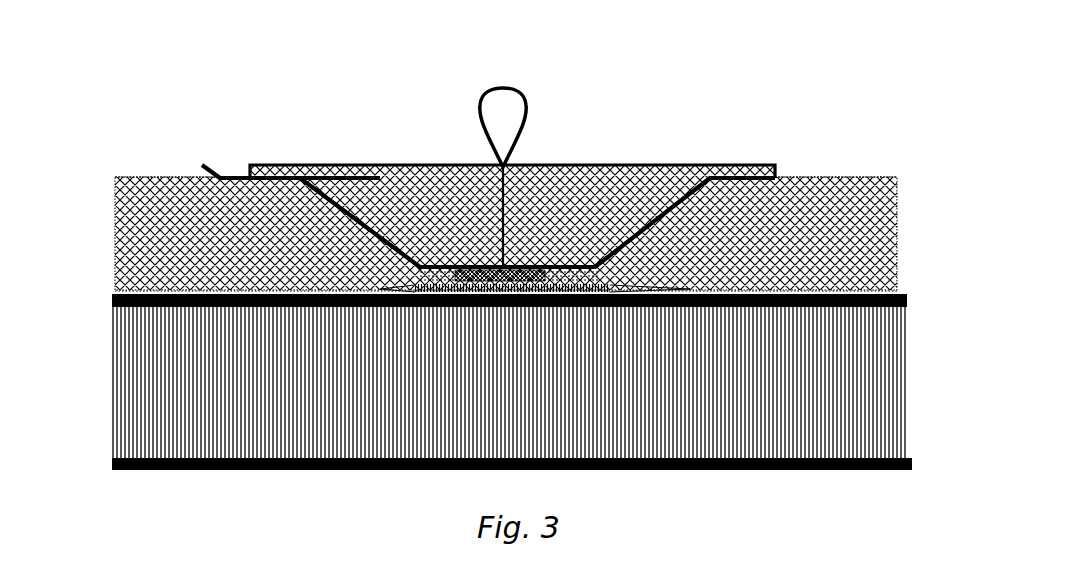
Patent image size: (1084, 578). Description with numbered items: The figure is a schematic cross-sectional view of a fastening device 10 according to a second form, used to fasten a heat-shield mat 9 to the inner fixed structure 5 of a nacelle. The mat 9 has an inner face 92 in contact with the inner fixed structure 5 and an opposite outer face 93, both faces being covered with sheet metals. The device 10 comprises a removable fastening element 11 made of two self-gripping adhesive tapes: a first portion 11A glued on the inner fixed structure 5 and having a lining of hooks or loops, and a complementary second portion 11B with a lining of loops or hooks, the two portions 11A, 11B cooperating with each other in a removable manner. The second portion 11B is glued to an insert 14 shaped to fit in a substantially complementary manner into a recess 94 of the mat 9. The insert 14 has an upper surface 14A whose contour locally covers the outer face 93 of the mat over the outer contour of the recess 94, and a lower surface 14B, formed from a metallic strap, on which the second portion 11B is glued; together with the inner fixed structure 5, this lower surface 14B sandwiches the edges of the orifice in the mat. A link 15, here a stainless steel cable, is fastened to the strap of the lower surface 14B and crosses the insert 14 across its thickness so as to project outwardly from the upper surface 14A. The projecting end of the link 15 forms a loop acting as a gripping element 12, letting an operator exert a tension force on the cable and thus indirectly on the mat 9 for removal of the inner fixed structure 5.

The inner fixed structure 5 is at (716, 478).
The heat-shield mat 9 is at (888, 204).
The fastening device 10 is at (481, 78).
The fastening element 11 is at (343, 308).
The first portion 11A is at (430, 310).
The second portion 11B is at (602, 215).
The gripping element 12 is at (531, 79).
The insert 14 is at (347, 177).
The upper surface 14A is at (340, 163).
The lower surface 14B is at (433, 252).
The link 15 is at (493, 217).
The inner face 92 is at (862, 306).
The outer face 93 is at (813, 177).
The recess 94 is at (690, 205).